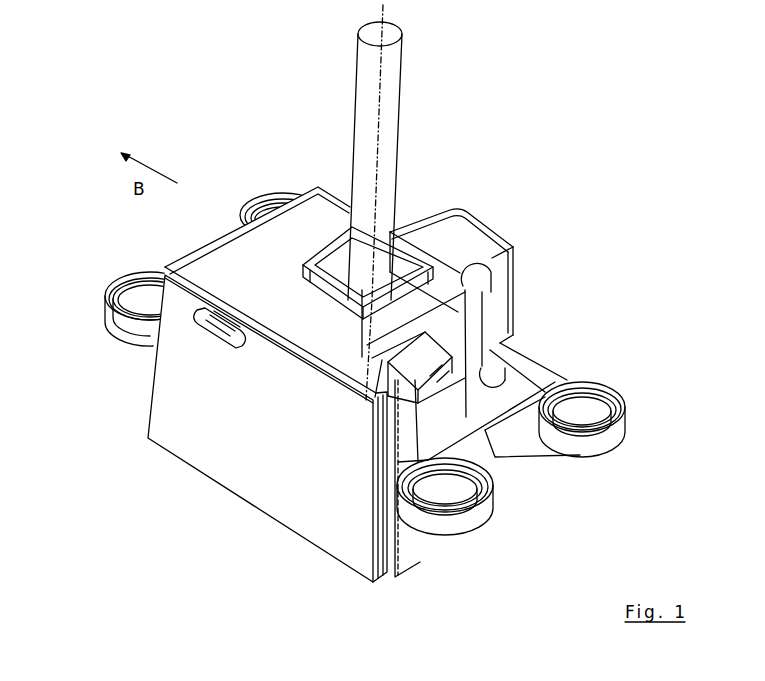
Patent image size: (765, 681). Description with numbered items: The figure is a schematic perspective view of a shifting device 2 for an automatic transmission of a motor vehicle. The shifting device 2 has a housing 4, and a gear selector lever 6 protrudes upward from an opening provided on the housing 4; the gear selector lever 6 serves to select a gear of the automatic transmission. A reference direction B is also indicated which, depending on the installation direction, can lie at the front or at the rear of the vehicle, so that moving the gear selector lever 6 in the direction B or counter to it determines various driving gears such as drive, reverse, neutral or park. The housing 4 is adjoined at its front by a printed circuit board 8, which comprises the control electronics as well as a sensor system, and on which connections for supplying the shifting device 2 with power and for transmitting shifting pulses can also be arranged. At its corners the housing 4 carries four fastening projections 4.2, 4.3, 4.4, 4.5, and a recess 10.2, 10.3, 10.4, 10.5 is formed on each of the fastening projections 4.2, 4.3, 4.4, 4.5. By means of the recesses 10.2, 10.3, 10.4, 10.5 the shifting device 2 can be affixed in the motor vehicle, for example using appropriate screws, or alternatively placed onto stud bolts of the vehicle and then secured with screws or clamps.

The shifting device 2 is at (513, 135).
The housing 4 is at (467, 247).
The fastening projection 4.2 is at (482, 512).
The fastening projection 4.3 is at (596, 445).
The fastening projection 4.4 is at (270, 198).
The fastening projection 4.5 is at (130, 327).
The gear selector lever 6 is at (372, 92).
The printed circuit board 8 is at (193, 433).
The recess 10.2 is at (445, 488).
The recess 10.3 is at (574, 409).
The recess 10.4 is at (258, 203).
The recess 10.5 is at (142, 305).